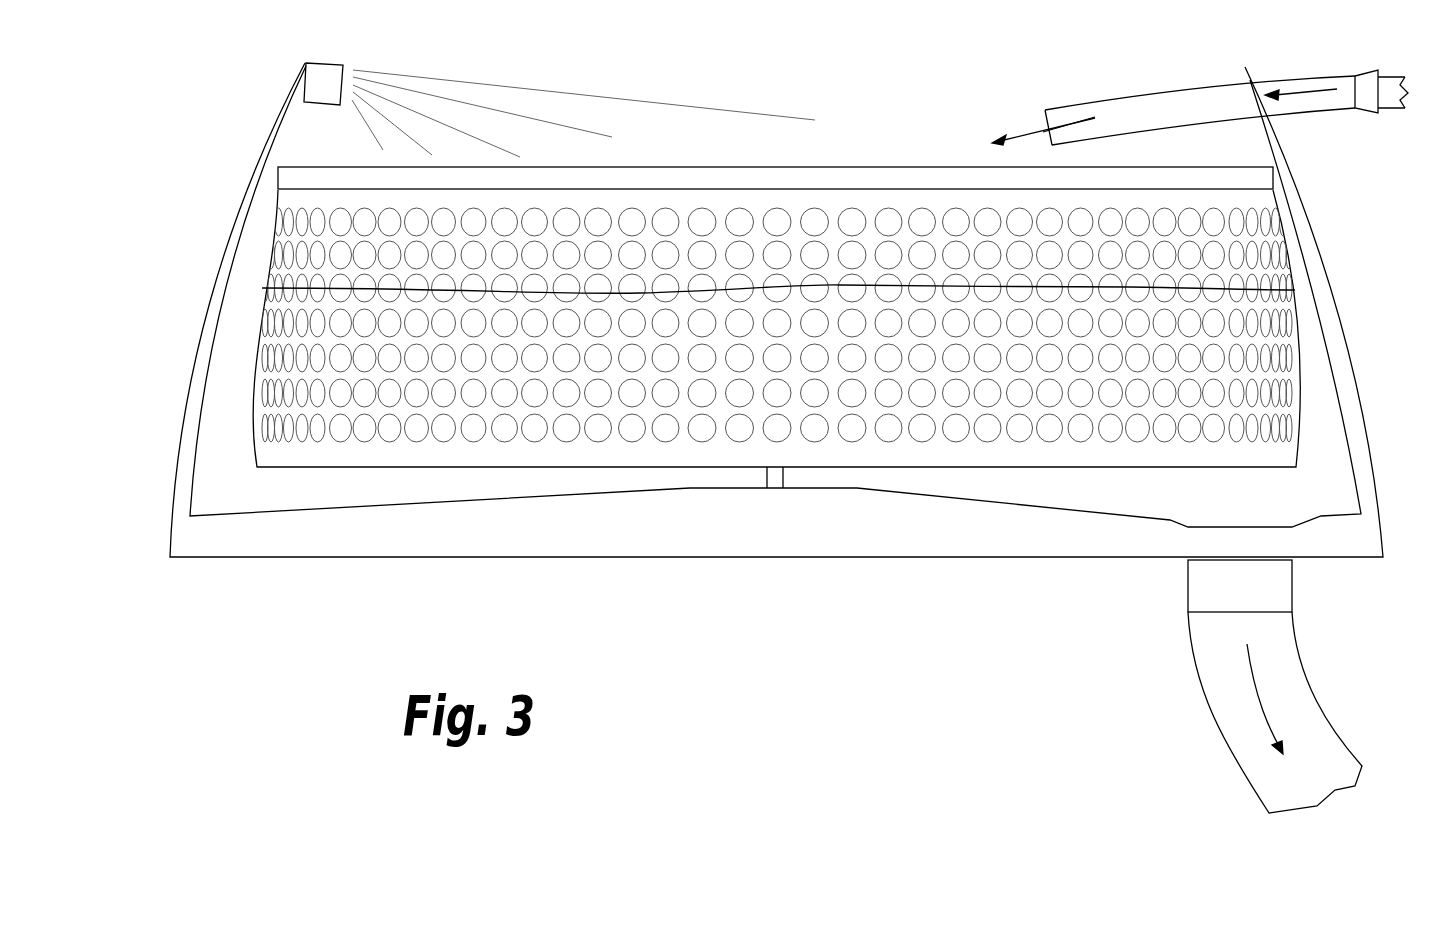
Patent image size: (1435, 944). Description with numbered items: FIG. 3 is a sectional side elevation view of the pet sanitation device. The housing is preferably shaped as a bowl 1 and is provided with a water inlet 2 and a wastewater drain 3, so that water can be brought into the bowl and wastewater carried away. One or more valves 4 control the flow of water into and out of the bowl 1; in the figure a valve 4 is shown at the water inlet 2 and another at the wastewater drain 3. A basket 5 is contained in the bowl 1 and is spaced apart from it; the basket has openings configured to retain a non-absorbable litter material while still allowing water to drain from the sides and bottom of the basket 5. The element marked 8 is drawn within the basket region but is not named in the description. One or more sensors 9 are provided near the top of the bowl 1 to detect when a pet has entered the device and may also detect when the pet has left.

The bowl 1 is at (227, 247).
The water inlet 2 is at (1303, 110).
The wastewater drain 3 is at (1334, 818).
The valve 4 is at (1365, 72).
The basket 5 is at (1247, 173).
The heating wire 8 is at (303, 288).
The sensor 9 is at (325, 82).